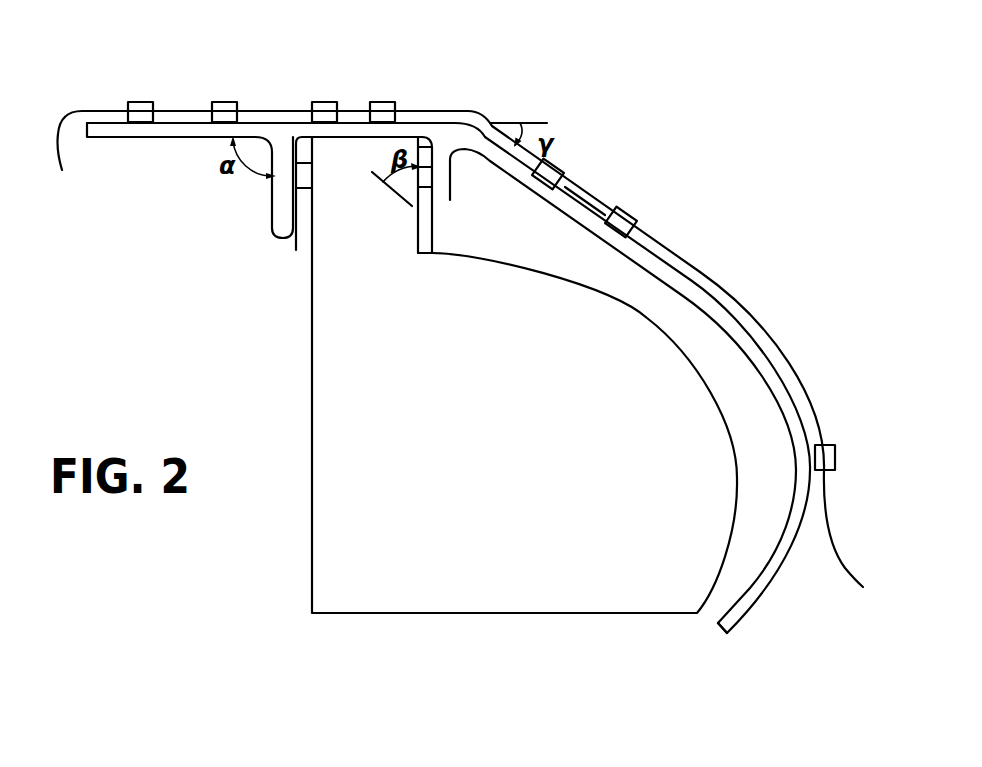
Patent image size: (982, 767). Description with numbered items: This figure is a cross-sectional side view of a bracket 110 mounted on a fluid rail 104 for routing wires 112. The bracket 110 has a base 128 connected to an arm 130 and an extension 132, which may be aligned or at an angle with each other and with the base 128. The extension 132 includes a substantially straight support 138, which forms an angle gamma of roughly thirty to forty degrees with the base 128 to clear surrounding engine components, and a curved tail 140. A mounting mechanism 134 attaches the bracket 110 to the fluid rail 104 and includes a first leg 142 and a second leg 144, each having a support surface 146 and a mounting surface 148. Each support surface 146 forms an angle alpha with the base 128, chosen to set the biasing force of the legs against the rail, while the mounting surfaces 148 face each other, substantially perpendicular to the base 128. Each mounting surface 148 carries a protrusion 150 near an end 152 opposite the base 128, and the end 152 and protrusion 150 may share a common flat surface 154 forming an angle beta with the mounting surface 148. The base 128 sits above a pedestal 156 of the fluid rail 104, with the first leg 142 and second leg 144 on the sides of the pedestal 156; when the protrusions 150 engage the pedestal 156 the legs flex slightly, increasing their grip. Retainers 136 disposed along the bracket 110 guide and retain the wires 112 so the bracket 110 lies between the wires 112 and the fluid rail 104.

The fluid rail 104 is at (505, 515).
The bracket 110 is at (828, 201).
The wires 112 is at (773, 340).
The base 128 is at (357, 127).
The arm 130 is at (185, 137).
The extension 132 is at (714, 327).
The mounting mechanism 134 is at (91, 243).
The retainers 136 is at (140, 102).
The support 138 is at (572, 212).
The tail 140 is at (788, 397).
The first leg 142 is at (286, 228).
The second leg 144 is at (437, 230).
The support surface 146 is at (273, 212).
The mounting surface 148 is at (426, 185).
The protrusion 150 is at (423, 192).
The end 152 is at (283, 240).
The common flat surface 154 is at (298, 250).
The pedestal 156 is at (325, 158).